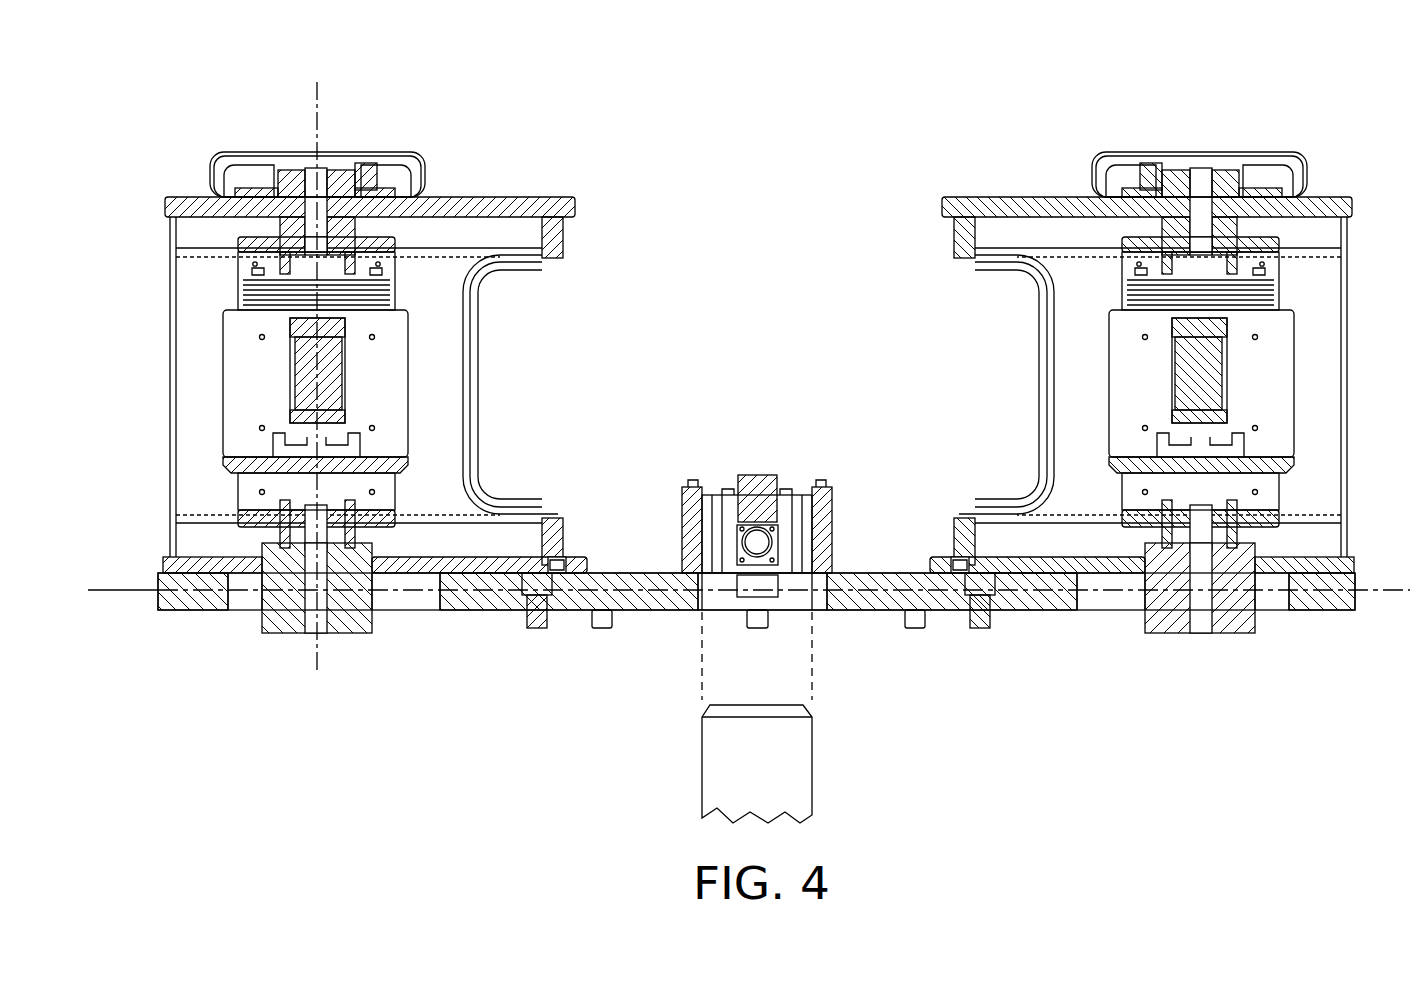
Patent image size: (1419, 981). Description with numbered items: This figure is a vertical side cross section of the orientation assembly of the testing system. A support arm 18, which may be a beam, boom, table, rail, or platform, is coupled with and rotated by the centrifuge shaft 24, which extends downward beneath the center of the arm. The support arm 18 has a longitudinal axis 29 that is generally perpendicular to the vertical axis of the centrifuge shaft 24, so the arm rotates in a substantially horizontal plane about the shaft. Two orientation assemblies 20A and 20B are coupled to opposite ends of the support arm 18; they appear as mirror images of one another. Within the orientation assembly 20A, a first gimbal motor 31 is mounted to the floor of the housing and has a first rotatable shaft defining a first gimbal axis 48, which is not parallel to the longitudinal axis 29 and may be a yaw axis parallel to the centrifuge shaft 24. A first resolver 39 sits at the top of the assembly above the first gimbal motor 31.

The orientation assembly 20A is at (185, 136).
The orientation assembly 20B is at (1332, 136).
The first gimbal axis 48 is at (318, 110).
The first resolver 39 is at (400, 152).
The longitudinal axis 29 is at (110, 590).
The first gimbal motor 31 is at (293, 553).
The support arm 18 is at (647, 611).
The centrifuge shaft 24 is at (720, 768).